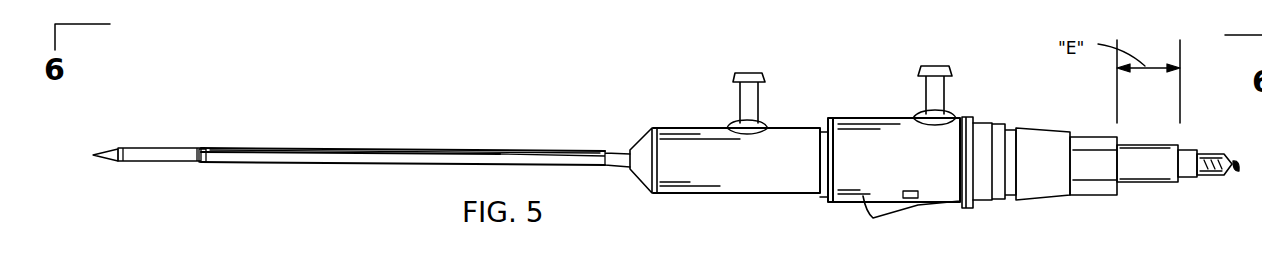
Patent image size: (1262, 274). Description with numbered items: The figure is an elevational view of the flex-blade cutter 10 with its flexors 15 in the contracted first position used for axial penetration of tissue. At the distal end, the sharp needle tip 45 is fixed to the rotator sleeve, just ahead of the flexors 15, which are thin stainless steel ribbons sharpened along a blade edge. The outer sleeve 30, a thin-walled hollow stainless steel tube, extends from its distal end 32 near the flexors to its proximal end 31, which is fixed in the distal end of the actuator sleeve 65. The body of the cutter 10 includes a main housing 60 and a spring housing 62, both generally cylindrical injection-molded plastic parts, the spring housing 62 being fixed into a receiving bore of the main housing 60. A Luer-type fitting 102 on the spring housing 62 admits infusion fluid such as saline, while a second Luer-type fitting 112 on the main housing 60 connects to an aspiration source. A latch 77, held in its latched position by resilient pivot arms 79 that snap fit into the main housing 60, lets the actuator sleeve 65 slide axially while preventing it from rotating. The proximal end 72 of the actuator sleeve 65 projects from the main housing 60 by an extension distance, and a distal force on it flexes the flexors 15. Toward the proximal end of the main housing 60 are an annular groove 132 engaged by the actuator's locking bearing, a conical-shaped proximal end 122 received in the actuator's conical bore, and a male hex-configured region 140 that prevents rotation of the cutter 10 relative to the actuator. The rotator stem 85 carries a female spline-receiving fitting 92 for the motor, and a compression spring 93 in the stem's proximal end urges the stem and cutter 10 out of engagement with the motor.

The flex-blade cutter 10 is at (412, 74).
The sharp needle tip 45 is at (103, 151).
The flexors 15 is at (147, 147).
The distal end of outer sleeve 32 is at (221, 163).
The outer sleeve 30 is at (360, 148).
The proximal end of outer sleeve 31 is at (594, 150).
The spring housing 62 is at (672, 130).
The main housing 60 is at (843, 118).
The Luer-type fitting 102 is at (740, 72).
The Luer-type fitting 112 is at (926, 68).
The latch 77 is at (878, 208).
The resilient pivot arms 79 is at (916, 203).
The annular groove 132 is at (1011, 128).
The conical-shaped proximal end 122 is at (1035, 128).
The male hex-configured region 140 is at (1088, 137).
The proximal end of actuator sleeve 72 is at (1146, 184).
The actuator sleeve 65 is at (1128, 184).
The rotator stem 85 is at (1184, 179).
The female spline-receiving fitting 92 is at (1210, 155).
The compression spring 93 is at (1242, 166).